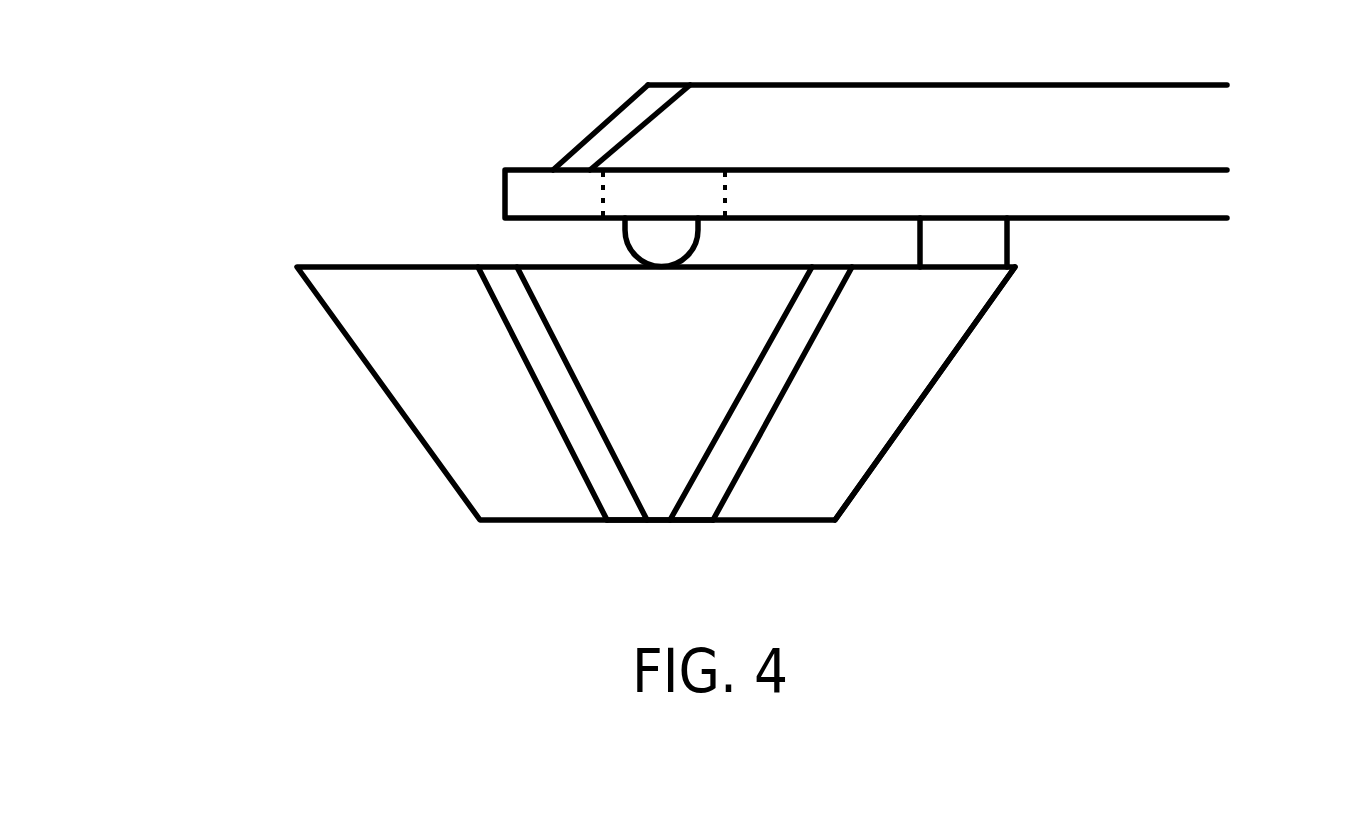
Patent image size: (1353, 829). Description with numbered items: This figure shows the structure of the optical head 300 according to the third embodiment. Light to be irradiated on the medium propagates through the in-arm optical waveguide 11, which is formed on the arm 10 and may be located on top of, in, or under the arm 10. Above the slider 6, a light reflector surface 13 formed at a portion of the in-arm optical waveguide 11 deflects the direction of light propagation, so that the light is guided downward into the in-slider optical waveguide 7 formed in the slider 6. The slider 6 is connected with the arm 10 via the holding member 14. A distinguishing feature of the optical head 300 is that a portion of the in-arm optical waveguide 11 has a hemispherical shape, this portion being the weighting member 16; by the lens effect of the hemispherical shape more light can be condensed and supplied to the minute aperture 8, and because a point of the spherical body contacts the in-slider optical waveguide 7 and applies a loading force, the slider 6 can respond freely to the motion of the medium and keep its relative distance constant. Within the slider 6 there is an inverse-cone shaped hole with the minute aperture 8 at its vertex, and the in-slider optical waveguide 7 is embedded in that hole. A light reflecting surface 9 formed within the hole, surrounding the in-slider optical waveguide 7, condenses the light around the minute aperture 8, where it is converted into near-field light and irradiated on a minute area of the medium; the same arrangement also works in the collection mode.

The optical head 300 is at (332, 157).
The in-arm optical waveguide 11 is at (1097, 100).
The light reflector surface 13 is at (598, 140).
The arm 10 is at (1150, 193).
The weighting member 16 is at (658, 240).
The holding member 14 is at (985, 240).
The slider 6 is at (463, 418).
The in-slider optical waveguide 7 is at (670, 357).
The minute aperture 8 is at (663, 522).
The light reflecting surface 9 is at (925, 396).